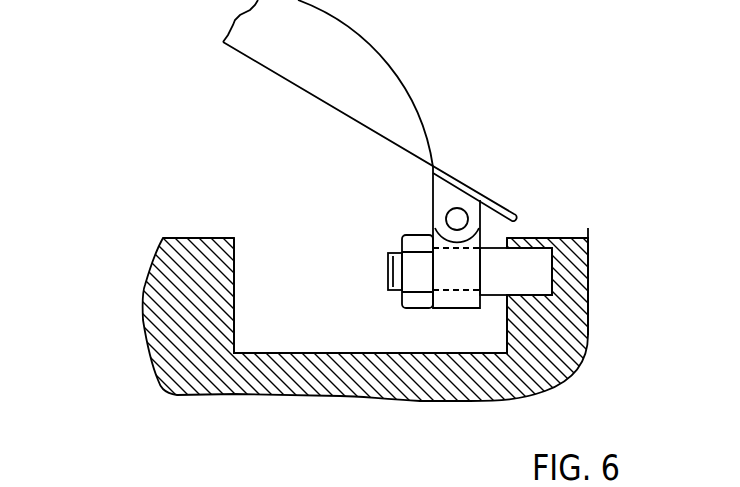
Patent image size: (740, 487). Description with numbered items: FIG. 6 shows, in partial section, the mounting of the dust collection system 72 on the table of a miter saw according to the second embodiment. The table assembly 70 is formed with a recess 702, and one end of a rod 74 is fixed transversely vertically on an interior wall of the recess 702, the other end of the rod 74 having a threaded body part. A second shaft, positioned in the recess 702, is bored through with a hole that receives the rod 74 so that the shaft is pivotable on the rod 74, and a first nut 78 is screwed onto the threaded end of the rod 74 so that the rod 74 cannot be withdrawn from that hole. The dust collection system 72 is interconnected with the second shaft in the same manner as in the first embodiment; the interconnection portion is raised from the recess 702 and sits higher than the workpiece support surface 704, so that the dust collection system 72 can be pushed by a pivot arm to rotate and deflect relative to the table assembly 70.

The table assembly 70 is at (155, 302).
The recess 702 is at (265, 268).
The workpiece support surface 704 is at (572, 238).
The rod 74 is at (535, 263).
The first nut 78 is at (413, 240).
The dust collection system 72 is at (402, 72).